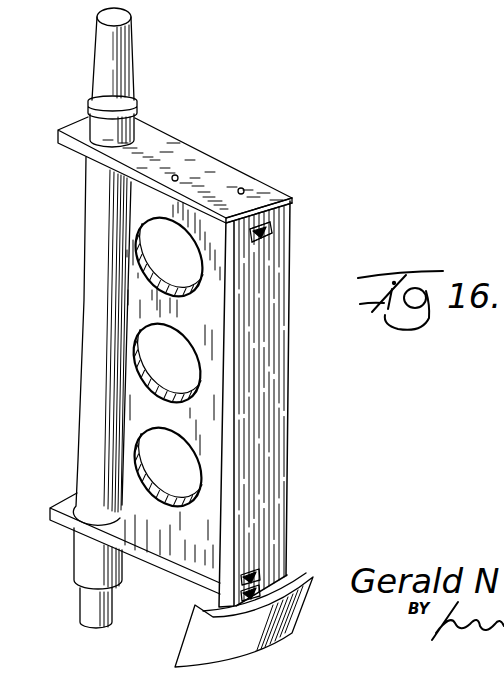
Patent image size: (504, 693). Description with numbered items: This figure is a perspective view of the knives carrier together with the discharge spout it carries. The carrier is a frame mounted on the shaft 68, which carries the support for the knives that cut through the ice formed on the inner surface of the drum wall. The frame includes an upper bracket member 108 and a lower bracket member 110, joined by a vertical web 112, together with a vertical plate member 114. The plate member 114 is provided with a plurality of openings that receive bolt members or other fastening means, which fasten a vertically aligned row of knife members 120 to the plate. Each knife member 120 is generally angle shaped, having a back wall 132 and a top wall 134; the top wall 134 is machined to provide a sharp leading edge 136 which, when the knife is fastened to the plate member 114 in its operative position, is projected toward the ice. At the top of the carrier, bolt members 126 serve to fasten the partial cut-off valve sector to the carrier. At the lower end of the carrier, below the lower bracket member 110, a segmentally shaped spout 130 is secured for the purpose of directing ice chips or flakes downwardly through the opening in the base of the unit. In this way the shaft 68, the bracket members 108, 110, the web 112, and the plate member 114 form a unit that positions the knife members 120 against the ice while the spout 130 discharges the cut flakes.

The shaft 68 is at (102, 49).
The upper bracket member 108 is at (158, 144).
The lower bracket member 110 is at (186, 579).
The vertical web 112 is at (134, 402).
The vertical plate member 114 is at (283, 377).
The knife members 120 is at (242, 576).
The bolt members 126 is at (178, 176).
The segmentally shaped spout 130 is at (296, 621).
The back wall 132 is at (273, 233).
The top wall 134 is at (268, 226).
The sharp leading edge 136 is at (272, 242).